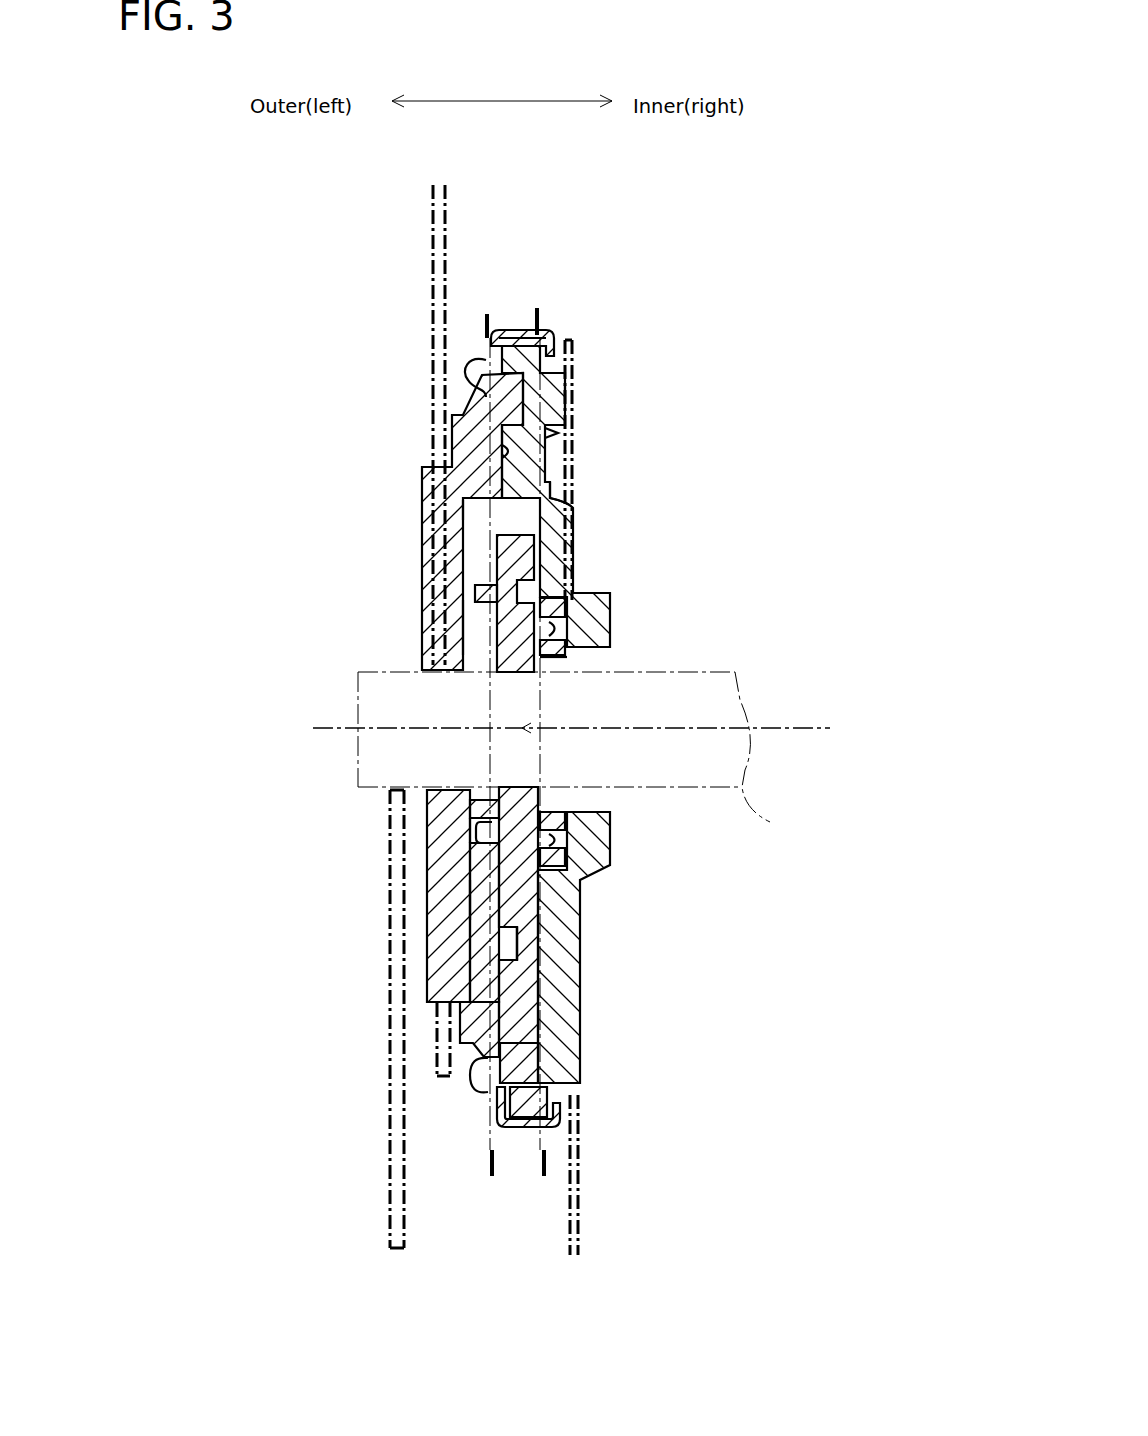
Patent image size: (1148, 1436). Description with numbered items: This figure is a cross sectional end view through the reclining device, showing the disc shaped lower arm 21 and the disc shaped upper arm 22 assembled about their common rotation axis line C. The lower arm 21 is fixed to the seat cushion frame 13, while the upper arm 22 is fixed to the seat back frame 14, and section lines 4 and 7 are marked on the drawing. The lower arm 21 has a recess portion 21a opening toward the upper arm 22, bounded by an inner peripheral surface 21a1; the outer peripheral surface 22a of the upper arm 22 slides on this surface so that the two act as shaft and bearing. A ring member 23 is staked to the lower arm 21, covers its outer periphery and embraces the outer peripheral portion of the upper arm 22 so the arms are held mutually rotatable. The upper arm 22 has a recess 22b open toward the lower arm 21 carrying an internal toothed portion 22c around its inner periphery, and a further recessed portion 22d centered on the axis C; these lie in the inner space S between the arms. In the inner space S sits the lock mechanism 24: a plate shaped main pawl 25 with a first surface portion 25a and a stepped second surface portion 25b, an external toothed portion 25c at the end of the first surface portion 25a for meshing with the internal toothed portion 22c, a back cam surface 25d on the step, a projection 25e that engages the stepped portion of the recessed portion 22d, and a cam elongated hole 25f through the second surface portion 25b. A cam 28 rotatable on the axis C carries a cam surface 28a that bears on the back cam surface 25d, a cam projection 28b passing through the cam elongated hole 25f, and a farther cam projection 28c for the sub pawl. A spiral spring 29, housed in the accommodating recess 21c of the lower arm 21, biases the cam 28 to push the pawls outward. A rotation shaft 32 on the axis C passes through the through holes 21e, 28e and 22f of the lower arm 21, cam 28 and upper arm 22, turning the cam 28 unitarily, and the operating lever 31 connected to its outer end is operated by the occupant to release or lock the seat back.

The seat back frame 14 is at (425, 222).
The outer peripheral surface 22a is at (508, 331).
The ring member 23 is at (522, 332).
The outer reference line 4 is at (473, 1169).
The inner reference line 7 is at (564, 1169).
The seat cushion frame 13 is at (582, 357).
The inner peripheral surface 21a1 is at (584, 398).
The recess 22b is at (498, 438).
The internal toothed portion 22c is at (536, 1036).
The recessed portion 22d is at (458, 512).
The recess portion 21a is at (568, 487).
The upper arm 22 is at (448, 525).
The lower arm 21 is at (575, 545).
The cam projection 28c is at (476, 594).
The inner space S is at (445, 628).
The accommodating recess 21c is at (567, 627).
The spring 29 is at (560, 668).
The through hole 22f is at (440, 672).
The rotation axis line C is at (586, 730).
The through hole 28e is at (517, 790).
The lock mechanism 24 is at (476, 782).
The rotation shaft 32 is at (770, 822).
The through hole 21e is at (596, 808).
The cam projection 28b is at (480, 824).
The cam elongated hole 25f is at (478, 840).
The cam 28 is at (556, 890).
The second surface portion 25b is at (480, 898).
The main pawl 25 is at (450, 937).
The cam surface 28a is at (542, 940).
The back cam surface 25d is at (490, 946).
The projection 25e is at (442, 988).
The first surface portion 25a is at (527, 1012).
The external toothed portion 25c is at (534, 1052).
The operating lever 31 is at (388, 1135).